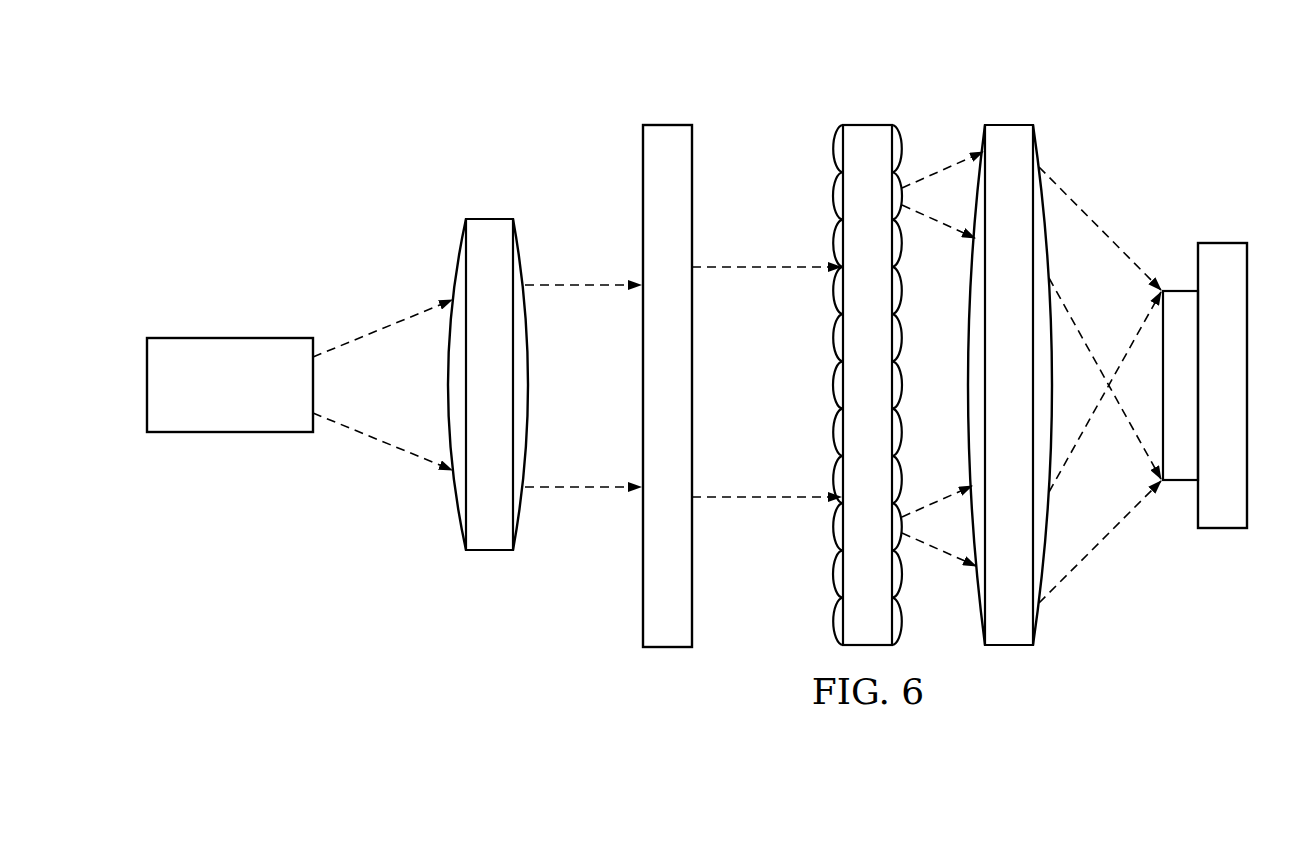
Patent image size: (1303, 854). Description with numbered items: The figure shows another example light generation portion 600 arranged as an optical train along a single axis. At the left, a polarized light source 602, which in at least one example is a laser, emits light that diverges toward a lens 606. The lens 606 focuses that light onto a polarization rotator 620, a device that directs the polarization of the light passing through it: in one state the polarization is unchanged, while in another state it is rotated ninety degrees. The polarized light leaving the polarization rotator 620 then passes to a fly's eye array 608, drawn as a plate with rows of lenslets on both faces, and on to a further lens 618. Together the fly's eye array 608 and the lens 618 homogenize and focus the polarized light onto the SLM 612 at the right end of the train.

The light generation portion 600 is at (457, 97).
The polarized light source 602 is at (187, 338).
The lens 606 is at (490, 219).
The polarization rotator 620 is at (668, 125).
The fly's eye array 608 is at (868, 125).
The lens 618 is at (1010, 125).
The SLM 612 is at (1222, 243).